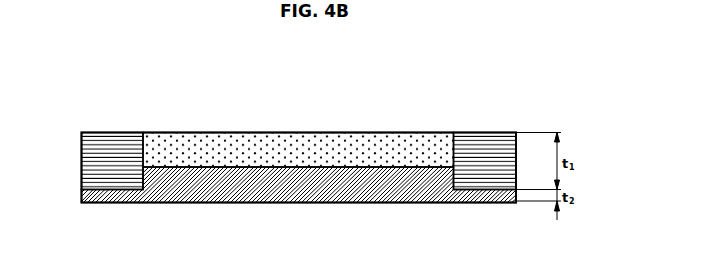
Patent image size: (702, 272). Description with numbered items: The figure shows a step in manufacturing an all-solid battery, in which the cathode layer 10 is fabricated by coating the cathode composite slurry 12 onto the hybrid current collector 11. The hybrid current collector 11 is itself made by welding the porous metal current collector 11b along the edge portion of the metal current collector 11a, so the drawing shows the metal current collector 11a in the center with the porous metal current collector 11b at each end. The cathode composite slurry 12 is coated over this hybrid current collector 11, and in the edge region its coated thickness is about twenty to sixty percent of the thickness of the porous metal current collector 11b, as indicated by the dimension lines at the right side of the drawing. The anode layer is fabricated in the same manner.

The cathode layer 10 is at (75, 132).
The hybrid current collector 11 is at (289, 117).
The metal current collector 11a is at (421, 140).
The porous metal current collector 11b is at (98, 138).
The cathode composite slurry 12 is at (322, 196).